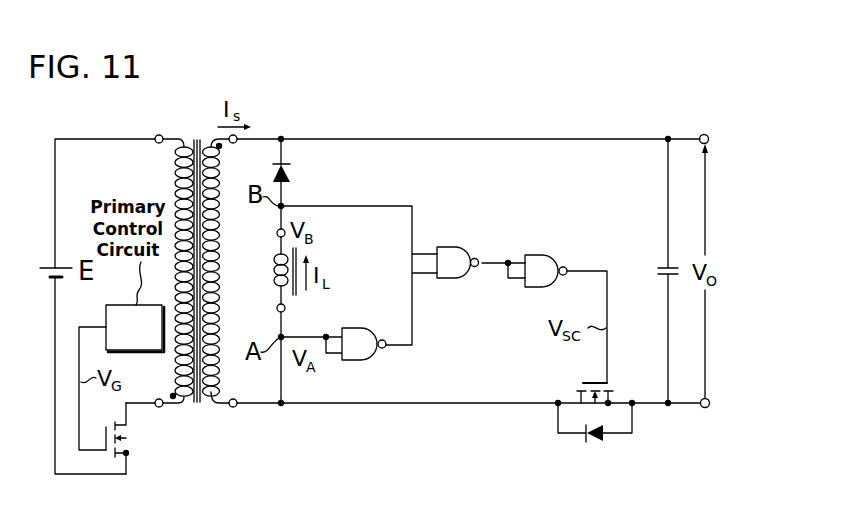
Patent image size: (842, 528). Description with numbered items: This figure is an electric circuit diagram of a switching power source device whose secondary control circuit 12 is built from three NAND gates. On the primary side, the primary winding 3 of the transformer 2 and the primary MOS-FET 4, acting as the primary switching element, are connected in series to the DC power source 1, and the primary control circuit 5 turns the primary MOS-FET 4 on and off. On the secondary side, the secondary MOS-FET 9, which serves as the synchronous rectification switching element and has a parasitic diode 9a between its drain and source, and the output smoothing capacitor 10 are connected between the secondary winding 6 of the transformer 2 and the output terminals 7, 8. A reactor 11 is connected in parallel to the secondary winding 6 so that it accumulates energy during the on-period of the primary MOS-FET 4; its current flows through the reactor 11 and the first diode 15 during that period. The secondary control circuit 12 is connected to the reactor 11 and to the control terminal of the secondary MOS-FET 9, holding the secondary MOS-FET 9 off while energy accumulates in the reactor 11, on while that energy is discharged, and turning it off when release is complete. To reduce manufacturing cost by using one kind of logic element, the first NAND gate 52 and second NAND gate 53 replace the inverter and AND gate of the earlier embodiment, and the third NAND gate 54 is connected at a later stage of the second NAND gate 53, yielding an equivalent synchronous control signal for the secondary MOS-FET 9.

The DC power source 1 is at (52, 266).
The transformer 2 is at (197, 139).
The primary winding 3 is at (173, 184).
The primary MOS-FET 4 is at (130, 438).
The primary control circuit 5 is at (142, 341).
The secondary winding 6 is at (220, 286).
The output terminal 7 is at (704, 134).
The output terminal 8 is at (704, 408).
The secondary MOS-FET 9 is at (584, 384).
The parasitic diode 9a is at (596, 442).
The output smoothing capacitor 10 is at (659, 271).
The reactor 11 is at (276, 262).
The secondary control circuit 12 is at (451, 270).
The first diode 15 is at (293, 170).
The first NAND gate 52 is at (360, 327).
The second NAND gate 53 is at (455, 247).
The third NAND gate 54 is at (543, 255).